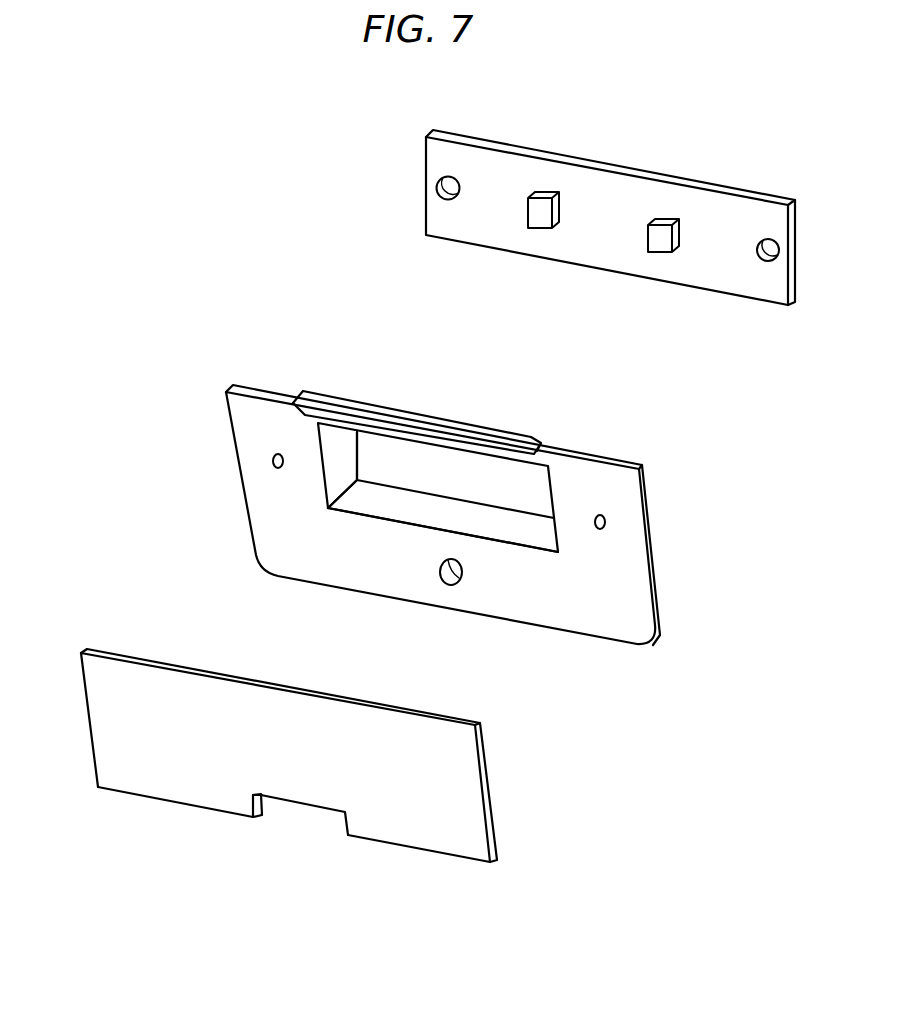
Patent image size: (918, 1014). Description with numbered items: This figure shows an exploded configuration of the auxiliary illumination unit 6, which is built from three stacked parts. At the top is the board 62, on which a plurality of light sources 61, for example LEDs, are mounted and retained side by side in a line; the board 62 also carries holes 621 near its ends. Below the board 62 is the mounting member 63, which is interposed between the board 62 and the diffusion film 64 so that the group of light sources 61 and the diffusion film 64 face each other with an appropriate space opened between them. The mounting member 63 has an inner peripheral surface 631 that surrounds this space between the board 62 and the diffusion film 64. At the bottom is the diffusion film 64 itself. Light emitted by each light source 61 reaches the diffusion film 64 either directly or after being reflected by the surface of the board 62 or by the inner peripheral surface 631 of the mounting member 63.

The auxiliary illumination unit 6 is at (165, 134).
The light source 61 is at (542, 192).
The board 62 is at (426, 213).
The mounting hole 621 is at (448, 182).
The mounting member 63 is at (255, 525).
The inner peripheral surface 631 is at (348, 458).
The diffusion film 64 is at (105, 743).